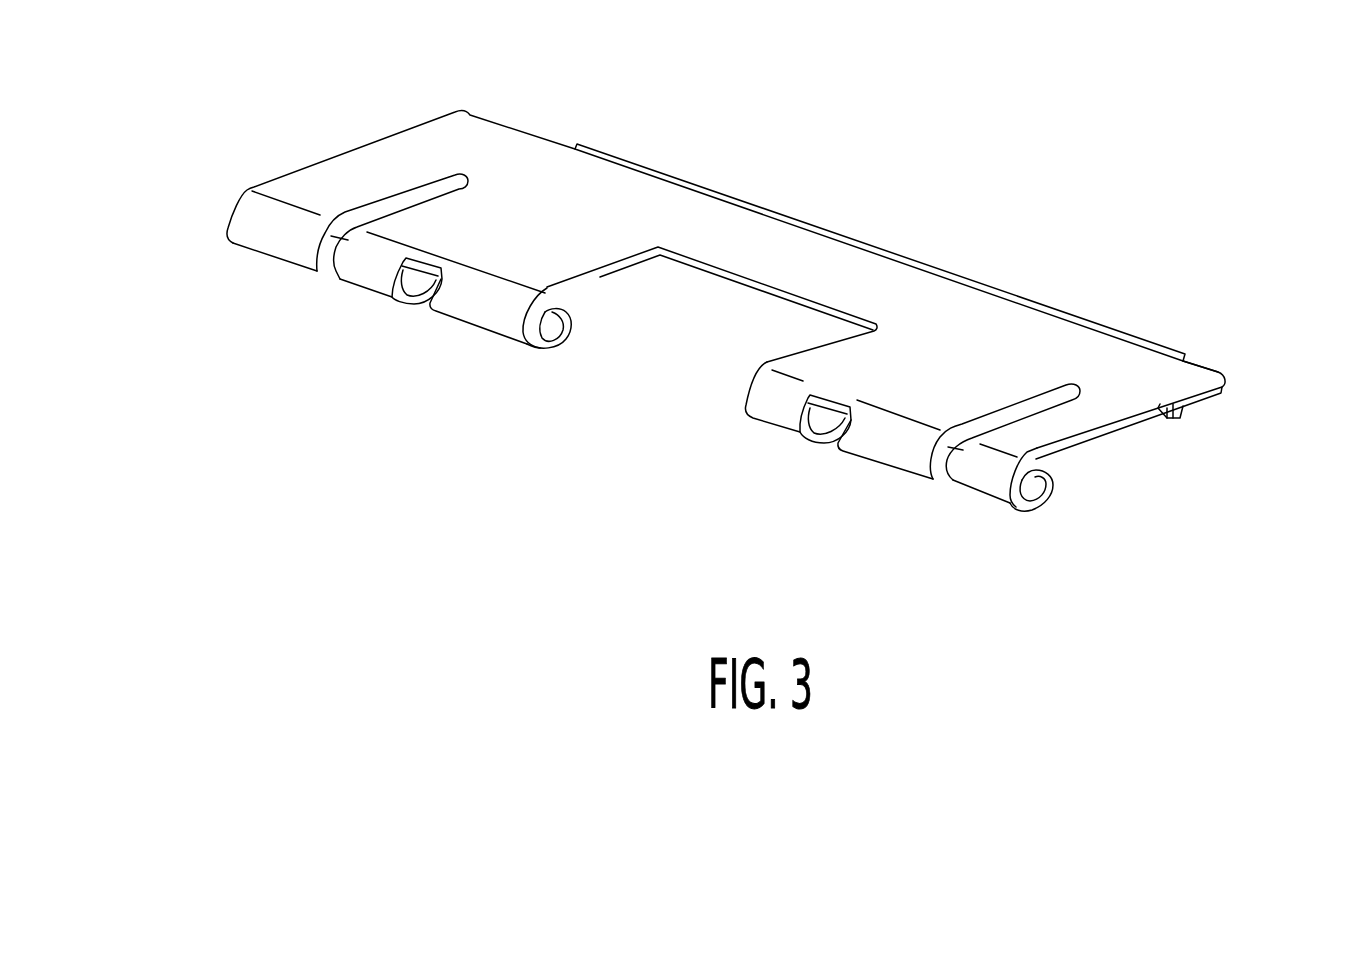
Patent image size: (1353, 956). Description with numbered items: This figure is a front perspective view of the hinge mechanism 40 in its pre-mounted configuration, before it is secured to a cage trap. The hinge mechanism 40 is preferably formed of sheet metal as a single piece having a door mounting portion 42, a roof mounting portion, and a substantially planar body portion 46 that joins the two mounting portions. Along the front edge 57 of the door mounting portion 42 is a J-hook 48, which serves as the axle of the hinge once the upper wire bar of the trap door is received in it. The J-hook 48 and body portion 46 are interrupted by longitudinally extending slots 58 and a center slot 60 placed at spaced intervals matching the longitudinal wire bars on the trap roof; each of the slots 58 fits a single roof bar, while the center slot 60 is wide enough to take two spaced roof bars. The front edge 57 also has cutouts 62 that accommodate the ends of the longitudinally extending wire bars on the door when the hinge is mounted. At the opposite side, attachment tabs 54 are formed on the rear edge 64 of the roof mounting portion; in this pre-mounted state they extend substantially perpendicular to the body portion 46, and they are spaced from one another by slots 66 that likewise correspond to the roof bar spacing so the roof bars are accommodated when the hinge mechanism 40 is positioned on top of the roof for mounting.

The hinge mechanism 40 is at (767, 301).
The door mounting portion 42 is at (475, 348).
The body portion 46 is at (557, 178).
The J-hook 48 is at (1027, 495).
The attachment tabs 54 is at (1185, 413).
The front edge 57 is at (907, 440).
The slots 58 is at (418, 185).
The center slot 60 is at (625, 260).
The cutouts 62 is at (402, 296).
The rear edge 64 is at (1185, 359).
The slots 66 is at (770, 212).